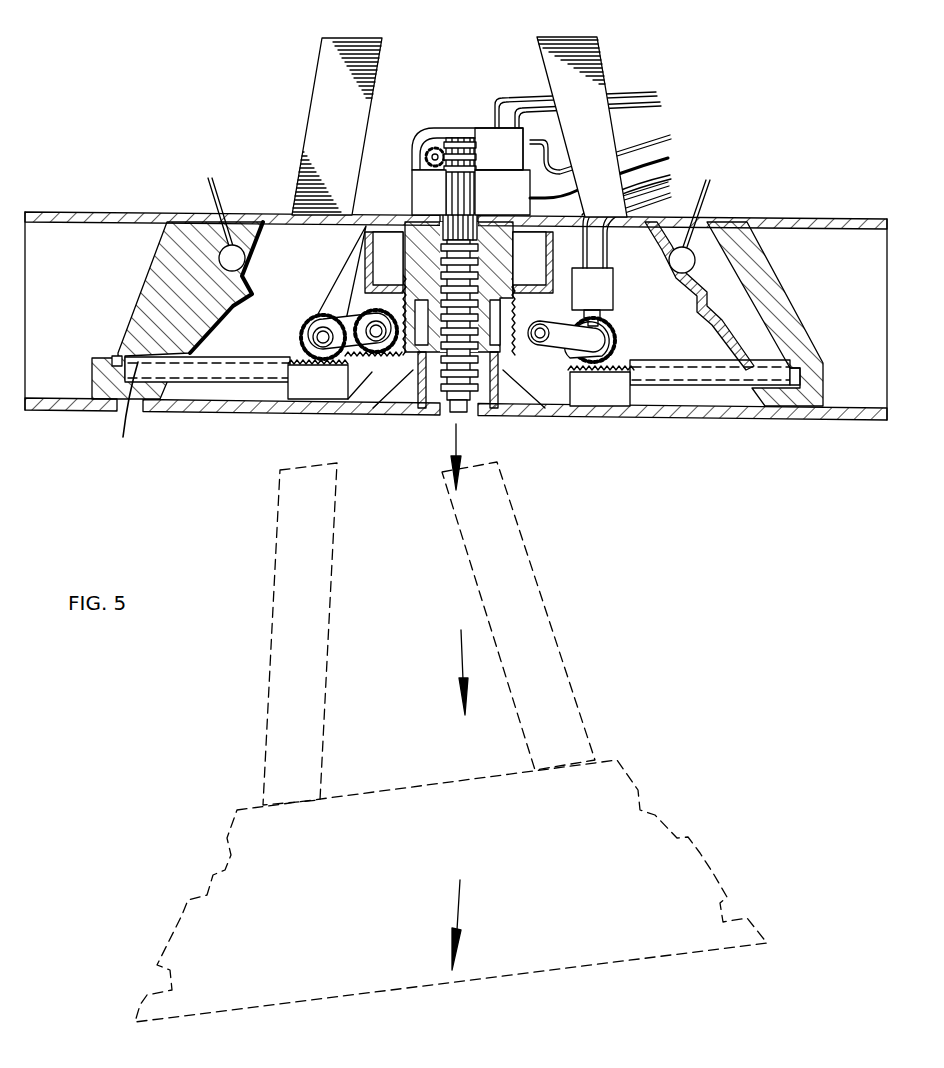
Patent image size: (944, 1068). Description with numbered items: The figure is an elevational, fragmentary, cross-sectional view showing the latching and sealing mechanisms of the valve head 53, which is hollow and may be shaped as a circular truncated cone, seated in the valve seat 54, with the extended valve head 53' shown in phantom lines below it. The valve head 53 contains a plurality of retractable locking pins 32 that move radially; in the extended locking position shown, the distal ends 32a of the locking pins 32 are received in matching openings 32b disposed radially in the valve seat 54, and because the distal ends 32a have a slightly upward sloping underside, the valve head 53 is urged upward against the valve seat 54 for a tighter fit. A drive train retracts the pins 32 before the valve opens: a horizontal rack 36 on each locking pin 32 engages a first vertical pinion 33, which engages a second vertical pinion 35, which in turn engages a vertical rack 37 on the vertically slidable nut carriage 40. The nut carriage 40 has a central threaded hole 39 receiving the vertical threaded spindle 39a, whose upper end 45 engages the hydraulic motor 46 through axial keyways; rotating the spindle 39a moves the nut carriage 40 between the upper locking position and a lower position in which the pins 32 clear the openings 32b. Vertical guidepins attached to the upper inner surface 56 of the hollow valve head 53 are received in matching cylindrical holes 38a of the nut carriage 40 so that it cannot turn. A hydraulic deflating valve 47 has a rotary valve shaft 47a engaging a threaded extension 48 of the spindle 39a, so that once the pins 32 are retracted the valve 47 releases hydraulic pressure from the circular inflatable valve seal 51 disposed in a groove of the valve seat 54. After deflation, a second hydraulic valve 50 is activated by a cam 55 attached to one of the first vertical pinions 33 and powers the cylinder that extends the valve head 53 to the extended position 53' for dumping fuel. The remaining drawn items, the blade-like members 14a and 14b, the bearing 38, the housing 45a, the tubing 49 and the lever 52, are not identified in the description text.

The blade 14a is at (597, 56).
The blade 14b is at (327, 59).
The locking pin 32 is at (203, 370).
The distal end of locking pin 32a is at (139, 411).
The opening in valve seat 32b is at (120, 360).
The first vertical pinion 33 is at (297, 324).
The second vertical pinion 35 is at (343, 274).
The horizontal rack 36 is at (312, 372).
The vertical rack 37 is at (388, 302).
The bearing 38 is at (418, 375).
The cylindrical hole 38a is at (388, 262).
The central threaded hole 39 is at (482, 395).
The vertical threaded spindle 39a is at (441, 395).
The nut carriage 40 is at (533, 262).
The upper end of spindle 45 is at (450, 197).
The motor housing 45a is at (471, 197).
The hydraulic motor 46 is at (412, 183).
The hydraulic deflating valve 47 is at (432, 128).
The rotary valve shaft 47a is at (425, 157).
The threaded extension of spindle 48 is at (468, 140).
The tubes 49 is at (668, 90).
The second hydraulic valve 50 is at (606, 304).
The inflatable valve seal 51 is at (670, 277).
The lever 52 is at (709, 197).
The valve head 53 is at (772, 314).
The extended valve head 53' is at (464, 891).
The valve seat 54 is at (730, 326).
The cam 55 is at (572, 356).
The upper inner surface of valve head 56 is at (522, 406).